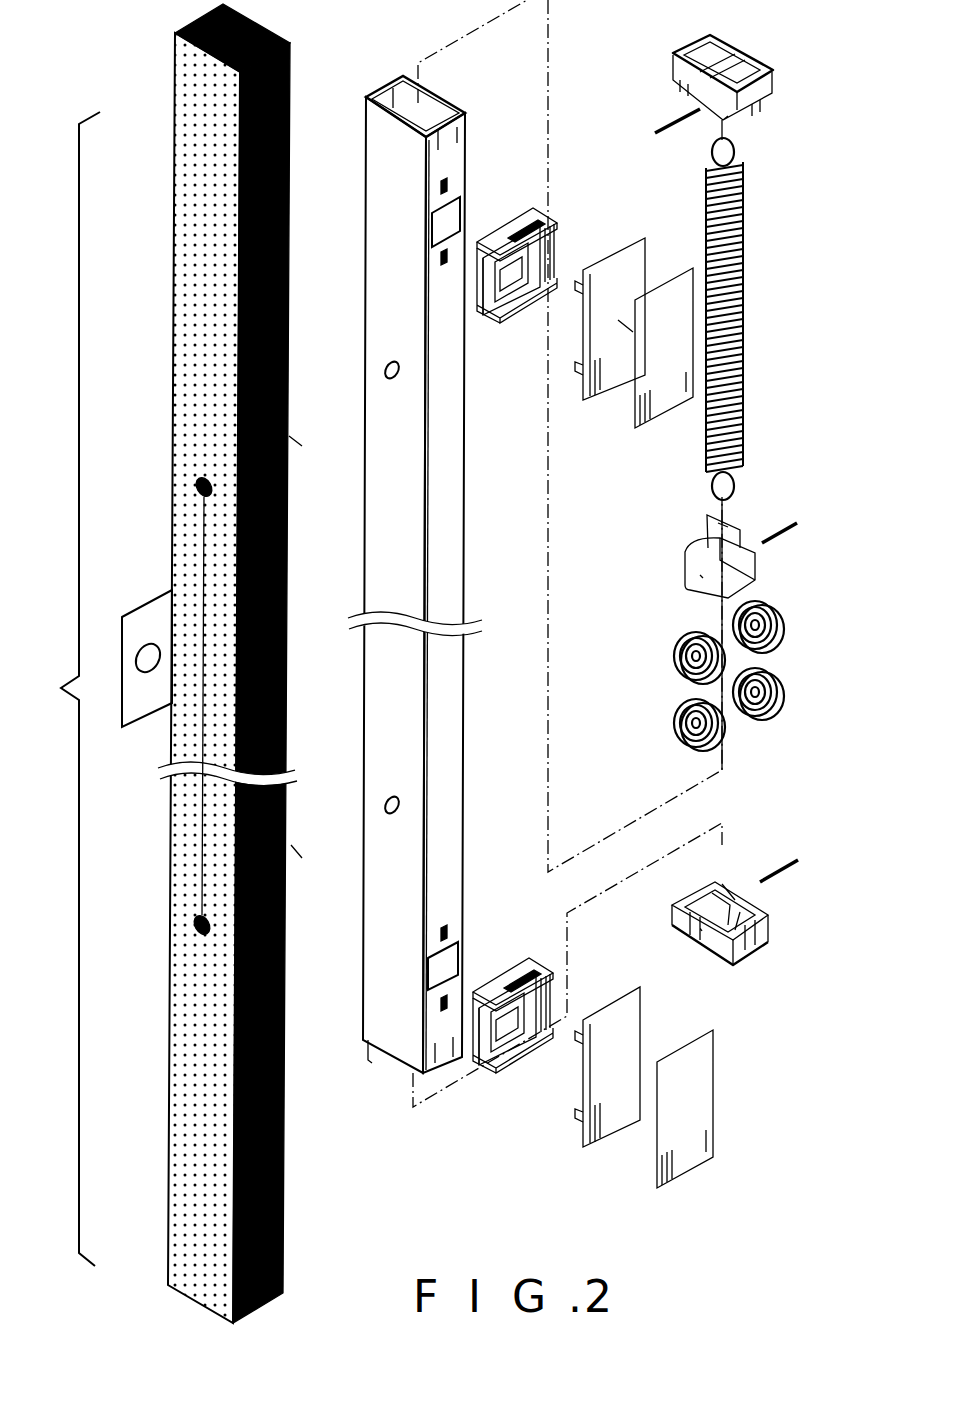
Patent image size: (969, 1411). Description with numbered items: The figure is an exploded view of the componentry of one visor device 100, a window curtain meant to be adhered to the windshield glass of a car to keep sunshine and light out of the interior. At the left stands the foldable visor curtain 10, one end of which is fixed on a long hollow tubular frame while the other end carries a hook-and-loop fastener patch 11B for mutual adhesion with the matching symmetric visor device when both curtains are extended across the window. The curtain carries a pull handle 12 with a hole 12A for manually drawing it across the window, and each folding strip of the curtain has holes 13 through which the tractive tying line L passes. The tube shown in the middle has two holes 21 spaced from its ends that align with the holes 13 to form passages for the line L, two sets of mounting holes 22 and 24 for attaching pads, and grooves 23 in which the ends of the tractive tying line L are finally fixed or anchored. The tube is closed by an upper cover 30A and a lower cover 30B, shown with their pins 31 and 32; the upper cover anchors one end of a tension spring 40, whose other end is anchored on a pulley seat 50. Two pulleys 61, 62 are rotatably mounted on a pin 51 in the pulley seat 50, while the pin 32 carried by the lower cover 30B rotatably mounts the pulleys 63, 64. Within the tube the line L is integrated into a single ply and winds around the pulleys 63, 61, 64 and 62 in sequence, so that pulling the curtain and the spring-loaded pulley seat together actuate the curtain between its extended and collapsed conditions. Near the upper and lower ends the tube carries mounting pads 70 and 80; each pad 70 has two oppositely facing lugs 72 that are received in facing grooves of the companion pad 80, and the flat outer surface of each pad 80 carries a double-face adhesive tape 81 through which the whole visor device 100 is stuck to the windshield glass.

The visor device 100 is at (54, 689).
The foldable visor curtain 10 is at (286, 112).
The hook-and-loop fastener patch 11B is at (180, 304).
The pull handle 12 is at (130, 722).
The hole 12A is at (146, 645).
The holes 13 is at (196, 490).
The tractive tying line L is at (299, 449).
The holes 21 is at (385, 372).
The mounting holes 22 is at (440, 232).
The grooves 23 is at (372, 96).
The mounting holes 24 is at (440, 186).
The upper cover 30A is at (745, 53).
The lower cover 30B is at (760, 942).
The pin 31 is at (662, 126).
The pin 32 is at (790, 862).
The tension spring 40 is at (745, 206).
The pulley seat 50 is at (710, 526).
The pin 51 is at (792, 522).
The pulley 61 is at (680, 640).
The pulley 62 is at (778, 616).
The pulley 63 is at (682, 705).
The pulley 64 is at (780, 688).
The mounting pad 70 is at (507, 232).
The lugs 72 is at (532, 221).
The mounting pad 80 is at (620, 243).
The double-face adhesive tape 81 is at (672, 402).